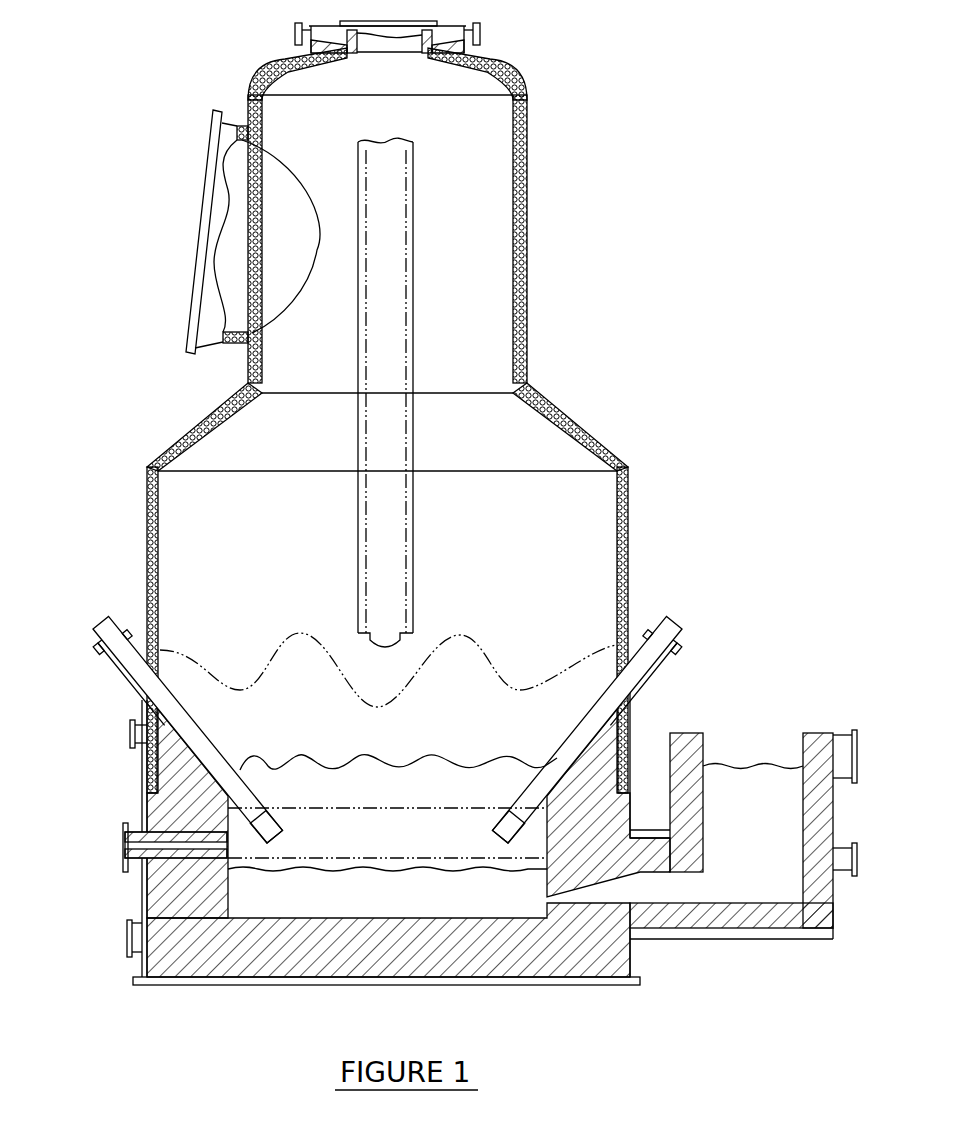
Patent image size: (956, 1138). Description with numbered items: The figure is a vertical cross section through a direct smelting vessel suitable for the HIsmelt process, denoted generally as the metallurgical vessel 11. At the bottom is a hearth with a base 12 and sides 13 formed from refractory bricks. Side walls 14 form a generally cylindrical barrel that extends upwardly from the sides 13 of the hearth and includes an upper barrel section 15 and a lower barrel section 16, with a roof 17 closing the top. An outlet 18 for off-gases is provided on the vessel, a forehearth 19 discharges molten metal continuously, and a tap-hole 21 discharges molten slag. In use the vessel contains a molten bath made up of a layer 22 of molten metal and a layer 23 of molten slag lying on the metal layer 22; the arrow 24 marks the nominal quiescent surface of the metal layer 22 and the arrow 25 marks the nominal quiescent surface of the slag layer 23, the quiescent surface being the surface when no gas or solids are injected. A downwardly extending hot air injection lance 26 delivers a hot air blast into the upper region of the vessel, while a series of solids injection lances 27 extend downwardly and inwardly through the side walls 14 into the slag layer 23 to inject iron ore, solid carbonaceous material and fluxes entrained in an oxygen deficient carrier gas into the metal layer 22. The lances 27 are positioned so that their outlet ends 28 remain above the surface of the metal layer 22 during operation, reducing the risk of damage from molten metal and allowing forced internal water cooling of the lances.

The metallurgical vessel 11 is at (145, 459).
The base 12 is at (243, 957).
The sides 13 is at (175, 910).
The side walls 14 is at (140, 767).
The upper barrel section 15 is at (145, 493).
The lower barrel section 16 is at (143, 807).
The roof 17 is at (205, 421).
The outlet 18 is at (202, 303).
The forehearth 19 is at (730, 829).
The tap-hole 21 is at (125, 850).
The layer of molten metal 22 is at (382, 909).
The layer of molten slag 23 is at (332, 846).
The nominal quiescent surface of the metal layer 24 is at (395, 856).
The nominal quiescent surface of the slag layer 25 is at (433, 806).
The hot air injection lance 26 is at (400, 490).
The solids injection lances 27 is at (103, 625).
The outlet ends 28 is at (267, 833).